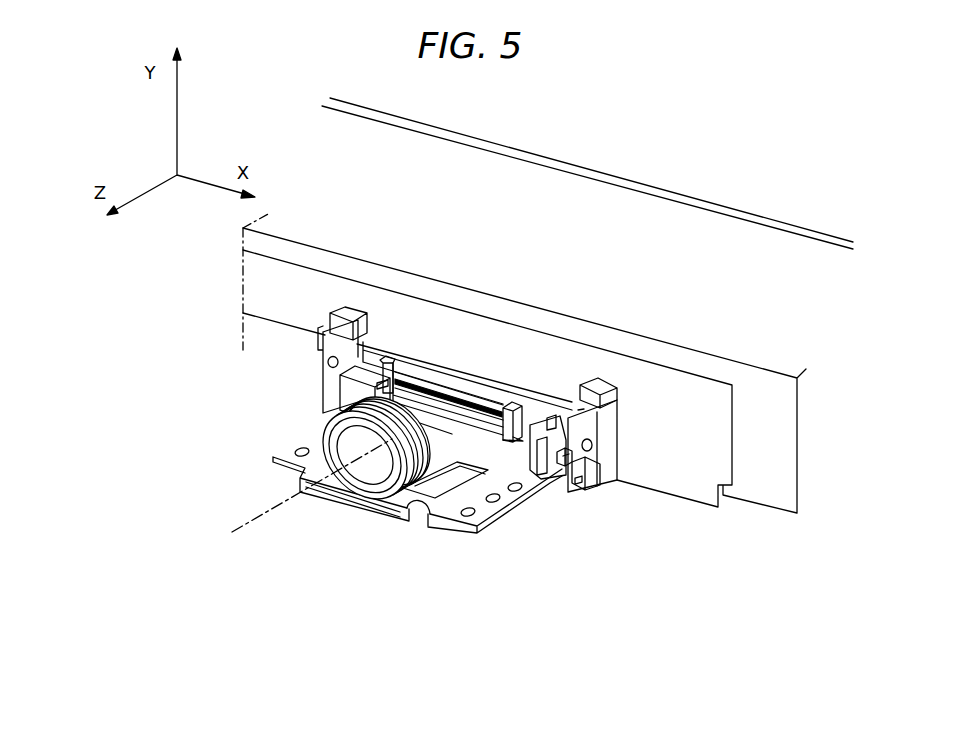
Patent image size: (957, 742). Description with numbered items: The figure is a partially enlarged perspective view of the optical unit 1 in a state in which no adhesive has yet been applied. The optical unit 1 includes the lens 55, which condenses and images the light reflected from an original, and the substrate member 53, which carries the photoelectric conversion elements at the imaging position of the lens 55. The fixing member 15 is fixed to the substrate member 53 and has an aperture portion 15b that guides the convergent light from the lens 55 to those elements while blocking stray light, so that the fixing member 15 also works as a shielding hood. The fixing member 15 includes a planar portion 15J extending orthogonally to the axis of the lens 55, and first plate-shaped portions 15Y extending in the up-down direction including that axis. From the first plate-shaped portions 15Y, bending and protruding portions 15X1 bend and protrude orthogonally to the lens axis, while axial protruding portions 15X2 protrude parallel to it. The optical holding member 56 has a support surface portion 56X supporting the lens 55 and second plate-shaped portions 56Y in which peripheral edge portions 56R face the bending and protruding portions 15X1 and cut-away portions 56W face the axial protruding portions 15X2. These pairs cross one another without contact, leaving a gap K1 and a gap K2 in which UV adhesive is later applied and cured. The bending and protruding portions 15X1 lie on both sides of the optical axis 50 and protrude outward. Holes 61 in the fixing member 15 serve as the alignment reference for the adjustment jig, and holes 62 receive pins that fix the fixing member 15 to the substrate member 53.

The optical unit 1 is at (662, 182).
The substrate member 53 is at (422, 225).
The fixing member 15 is at (442, 431).
The aperture portion 15b is at (465, 400).
The planar portion 15J is at (537, 413).
The bending and protruding portion 15X1 is at (345, 312).
The axial protruding portion 15X2 is at (578, 478).
The first plate-shaped portion 15Y is at (377, 383).
The holes 61 is at (328, 369).
The holes 62 is at (336, 412).
The optical holding member 56 is at (417, 523).
The peripheral edge portion 56R is at (583, 396).
The cut-away portion 56W is at (567, 466).
The support surface portion 56X is at (448, 483).
The second plate-shaped portion 56Y is at (548, 478).
The lens 55 is at (332, 488).
The optical axis 50 is at (268, 505).
The gap K1 is at (580, 412).
The gap K2 is at (565, 457).